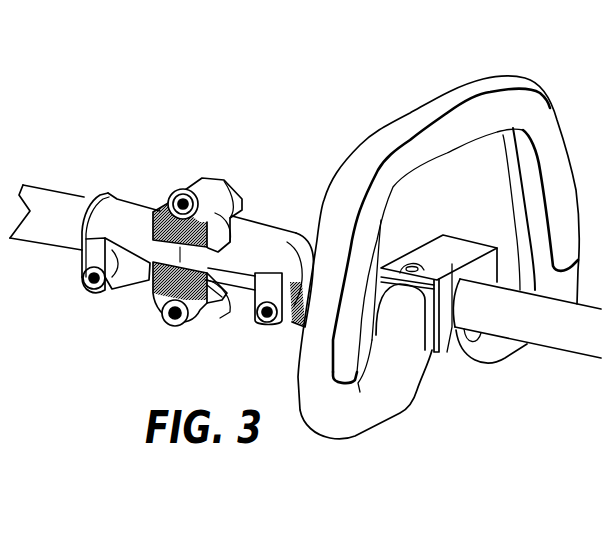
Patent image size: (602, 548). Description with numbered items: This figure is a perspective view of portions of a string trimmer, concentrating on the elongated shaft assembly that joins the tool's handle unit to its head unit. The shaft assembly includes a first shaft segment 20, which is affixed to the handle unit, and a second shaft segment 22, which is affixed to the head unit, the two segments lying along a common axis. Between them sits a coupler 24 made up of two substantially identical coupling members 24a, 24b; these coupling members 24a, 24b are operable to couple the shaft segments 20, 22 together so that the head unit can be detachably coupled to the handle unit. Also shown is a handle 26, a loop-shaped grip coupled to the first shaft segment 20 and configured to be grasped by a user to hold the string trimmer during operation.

The first shaft segment 20 is at (563, 335).
The second shaft segment 22 is at (62, 237).
The coupler 24 is at (152, 328).
The coupling member 24a is at (130, 205).
The coupling member 24b is at (264, 232).
The handle 26 is at (390, 134).